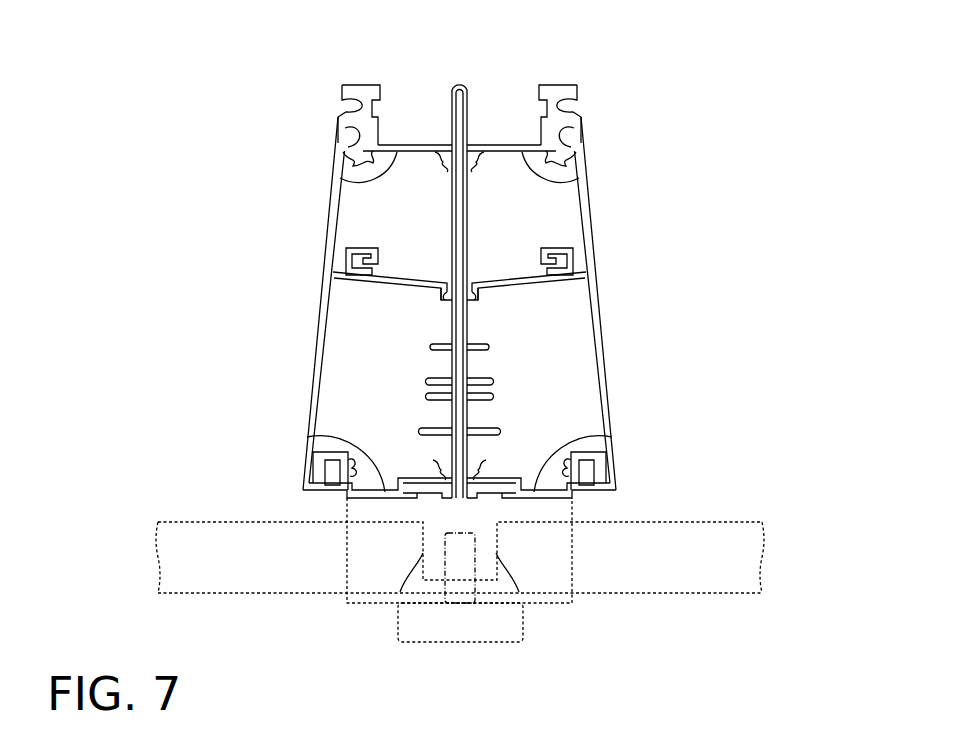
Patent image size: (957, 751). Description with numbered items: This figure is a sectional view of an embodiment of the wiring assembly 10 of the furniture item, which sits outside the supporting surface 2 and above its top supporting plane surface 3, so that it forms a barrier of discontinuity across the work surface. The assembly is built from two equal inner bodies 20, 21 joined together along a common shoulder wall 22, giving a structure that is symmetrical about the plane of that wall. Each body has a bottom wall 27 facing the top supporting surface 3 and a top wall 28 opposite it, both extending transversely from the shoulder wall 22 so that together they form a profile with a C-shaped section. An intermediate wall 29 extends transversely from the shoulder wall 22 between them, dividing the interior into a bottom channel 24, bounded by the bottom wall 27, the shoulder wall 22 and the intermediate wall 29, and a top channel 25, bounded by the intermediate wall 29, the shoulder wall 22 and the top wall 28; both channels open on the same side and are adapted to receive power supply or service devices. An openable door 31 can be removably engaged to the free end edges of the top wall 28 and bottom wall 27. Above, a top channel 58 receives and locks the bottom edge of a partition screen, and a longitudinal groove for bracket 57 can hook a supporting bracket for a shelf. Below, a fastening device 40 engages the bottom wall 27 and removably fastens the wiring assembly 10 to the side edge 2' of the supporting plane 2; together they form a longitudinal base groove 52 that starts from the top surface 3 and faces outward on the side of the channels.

The wiring assembly 10 is at (712, 336).
The top channel 58 is at (500, 144).
The longitudinal groove for bracket 57 is at (573, 113).
The top wall 28 is at (575, 158).
The openable door 31 is at (594, 250).
The inner body 20 is at (425, 196).
The inner body 21 is at (495, 196).
The top channel 25 is at (583, 222).
The shoulder wall 22 is at (468, 229).
The intermediate wall 29 is at (548, 285).
The bottom channel 24 is at (570, 393).
The bottom wall 27 is at (605, 440).
The longitudinal base groove 52 is at (592, 498).
The top supporting plane surface 3 is at (705, 522).
The supporting surface 2 is at (460, 623).
The fastening device 40 is at (403, 513).
The side edge 2' is at (479, 600).